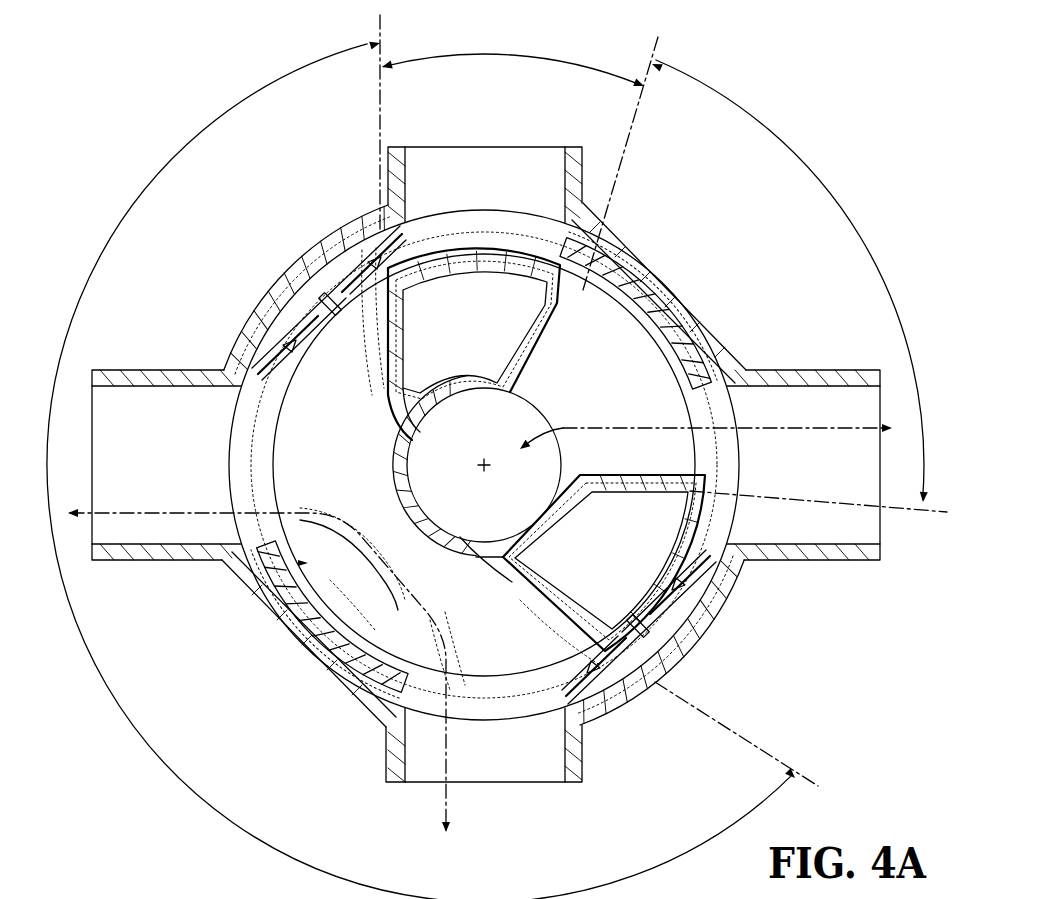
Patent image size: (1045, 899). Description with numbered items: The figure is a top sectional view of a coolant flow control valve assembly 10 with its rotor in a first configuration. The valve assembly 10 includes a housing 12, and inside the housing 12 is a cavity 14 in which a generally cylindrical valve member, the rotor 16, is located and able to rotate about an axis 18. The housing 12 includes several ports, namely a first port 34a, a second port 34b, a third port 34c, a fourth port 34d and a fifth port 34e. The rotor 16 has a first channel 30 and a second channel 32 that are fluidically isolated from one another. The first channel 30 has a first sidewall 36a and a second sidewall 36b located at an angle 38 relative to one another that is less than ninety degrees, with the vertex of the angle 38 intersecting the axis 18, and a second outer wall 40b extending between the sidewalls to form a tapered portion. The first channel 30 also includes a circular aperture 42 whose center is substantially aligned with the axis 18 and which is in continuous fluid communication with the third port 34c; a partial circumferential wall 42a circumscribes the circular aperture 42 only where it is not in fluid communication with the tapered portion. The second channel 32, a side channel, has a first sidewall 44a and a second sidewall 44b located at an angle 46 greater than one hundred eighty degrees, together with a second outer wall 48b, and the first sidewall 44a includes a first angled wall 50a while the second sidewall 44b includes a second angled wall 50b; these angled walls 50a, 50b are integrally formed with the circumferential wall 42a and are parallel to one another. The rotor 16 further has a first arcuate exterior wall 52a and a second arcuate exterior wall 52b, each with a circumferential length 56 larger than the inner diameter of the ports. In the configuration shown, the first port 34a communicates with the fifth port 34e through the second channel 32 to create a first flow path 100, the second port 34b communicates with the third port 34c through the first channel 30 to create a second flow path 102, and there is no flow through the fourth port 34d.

The coolant flow control valve assembly 10 is at (113, 103).
The housing 12 is at (679, 290).
The cavity 14 is at (278, 648).
The rotor 16 is at (268, 430).
The axis 18 is at (546, 420).
The first channel 30 is at (735, 330).
The second channel 32 is at (292, 600).
The first port 34a is at (578, 782).
The second port 34b is at (833, 548).
The third port 34c is at (468, 537).
The fourth port 34d is at (405, 178).
The fifth port 34e is at (168, 540).
The first sidewall 36a is at (562, 318).
The second sidewall 36b is at (618, 482).
The angle 38 is at (820, 172).
The second outer wall 40b is at (649, 378).
The circular aperture 42 is at (428, 478).
The partial circumferential wall 42a is at (396, 440).
The first sidewall 44a is at (388, 335).
The second sidewall 44b is at (555, 622).
The angle 46 is at (100, 255).
The second outer wall 48b is at (345, 675).
The first angled wall 50a is at (412, 377).
The second angled wall 50b is at (518, 563).
The first arcuate exterior wall 52a is at (484, 262).
The second arcuate exterior wall 52b is at (690, 648).
The circumferential length 56 is at (530, 58).
The first flow path 100 is at (448, 768).
The second flow path 102 is at (762, 425).